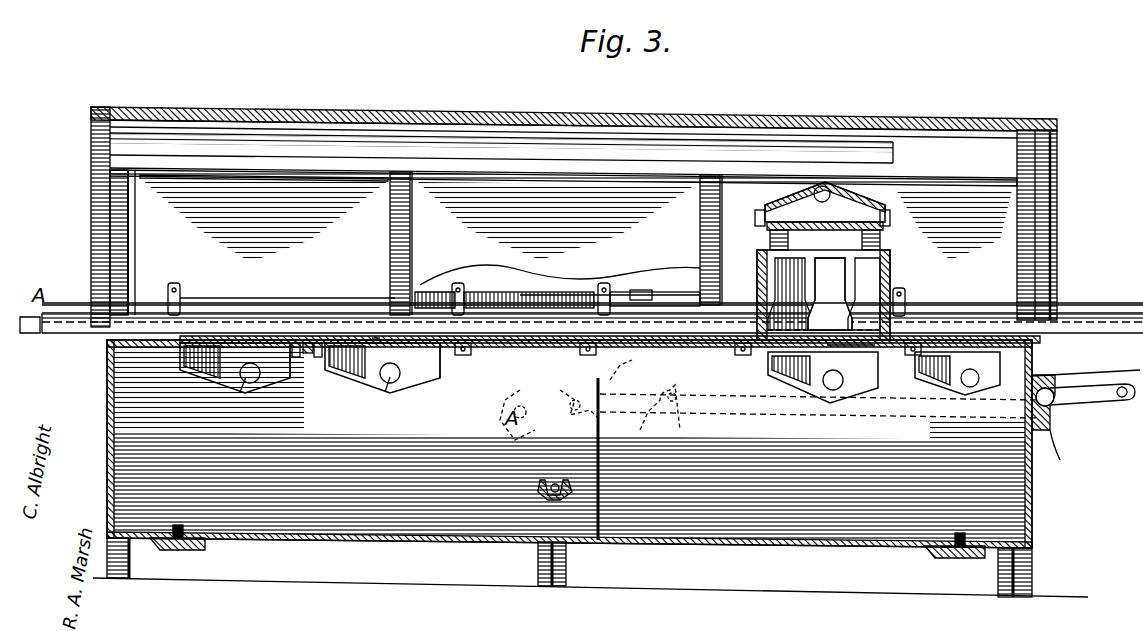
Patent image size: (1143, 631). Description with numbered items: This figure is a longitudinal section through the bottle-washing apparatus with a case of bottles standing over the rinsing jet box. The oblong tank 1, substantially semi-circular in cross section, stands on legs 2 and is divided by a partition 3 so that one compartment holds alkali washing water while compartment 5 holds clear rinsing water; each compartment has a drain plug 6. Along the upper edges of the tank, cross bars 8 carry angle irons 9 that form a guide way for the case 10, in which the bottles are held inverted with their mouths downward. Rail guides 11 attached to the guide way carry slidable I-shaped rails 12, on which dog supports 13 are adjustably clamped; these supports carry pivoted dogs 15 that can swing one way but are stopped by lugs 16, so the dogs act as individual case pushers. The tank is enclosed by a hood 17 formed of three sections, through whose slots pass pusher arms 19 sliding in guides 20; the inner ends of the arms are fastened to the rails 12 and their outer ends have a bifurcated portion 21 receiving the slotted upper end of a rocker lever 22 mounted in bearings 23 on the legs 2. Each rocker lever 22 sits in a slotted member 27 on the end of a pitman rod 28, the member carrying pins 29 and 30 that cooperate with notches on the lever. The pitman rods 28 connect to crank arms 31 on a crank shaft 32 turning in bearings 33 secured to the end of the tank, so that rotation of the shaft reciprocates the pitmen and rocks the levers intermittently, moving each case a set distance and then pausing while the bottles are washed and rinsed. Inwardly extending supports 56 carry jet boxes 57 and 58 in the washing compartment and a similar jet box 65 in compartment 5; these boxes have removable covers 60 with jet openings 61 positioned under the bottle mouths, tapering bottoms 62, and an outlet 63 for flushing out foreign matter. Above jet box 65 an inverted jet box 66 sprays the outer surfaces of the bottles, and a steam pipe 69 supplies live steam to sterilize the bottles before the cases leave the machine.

The tank 1 is at (345, 542).
The legs 2 is at (130, 576).
The partition 3 is at (603, 545).
The compartment 5 is at (850, 432).
The drain plug 6 is at (182, 548).
The cross bars 8 is at (90, 340).
The angle irons 9 is at (581, 311).
The case 10 is at (760, 258).
The rail guides 11 is at (192, 310).
The rails 12 is at (1120, 313).
The dog supports 13 is at (168, 292).
The dogs 15 is at (182, 296).
The lugs 16 is at (176, 283).
The hood 17 is at (380, 108).
The pusher arms 19 is at (560, 295).
The guides 20 is at (522, 296).
The bifurcated portion 21 is at (640, 290).
The rocker levers 22 is at (633, 379).
The bearings 23 is at (555, 470).
The slotted member 27 is at (690, 412).
The pitman rod 28 is at (912, 412).
The pin 29 is at (570, 396).
The pin 30 is at (672, 410).
The crank arms 31 is at (1088, 406).
The crank shaft 32 is at (1035, 415).
The bearings 33 is at (1062, 460).
The supports 56 is at (465, 356).
The jet box 57 is at (205, 360).
The jet box 58 is at (360, 362).
The covers 60 is at (375, 345).
The jet openings 61 is at (278, 352).
The tapering bottoms 62 is at (265, 380).
The outlet 63 is at (240, 392).
The jet box 65 is at (775, 360).
The inverted jet box 66 is at (880, 200).
The steam pipe 69 is at (1130, 400).